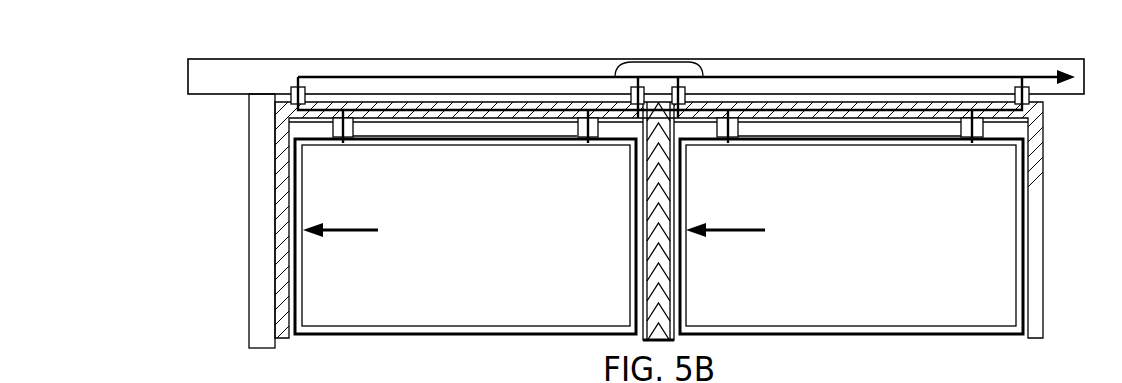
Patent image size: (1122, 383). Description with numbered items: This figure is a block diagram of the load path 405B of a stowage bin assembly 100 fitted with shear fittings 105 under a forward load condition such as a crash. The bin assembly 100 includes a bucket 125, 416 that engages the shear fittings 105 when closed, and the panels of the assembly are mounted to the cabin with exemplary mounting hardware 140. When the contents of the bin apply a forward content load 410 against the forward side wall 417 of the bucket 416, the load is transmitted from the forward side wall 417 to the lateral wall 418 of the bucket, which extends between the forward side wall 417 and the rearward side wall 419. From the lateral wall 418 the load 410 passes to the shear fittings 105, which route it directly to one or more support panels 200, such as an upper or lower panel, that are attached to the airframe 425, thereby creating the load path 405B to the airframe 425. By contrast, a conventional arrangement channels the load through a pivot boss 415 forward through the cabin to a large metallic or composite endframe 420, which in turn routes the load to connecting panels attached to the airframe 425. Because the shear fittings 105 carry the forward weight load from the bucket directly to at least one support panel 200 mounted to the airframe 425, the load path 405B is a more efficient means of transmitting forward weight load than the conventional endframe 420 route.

The stowage bin assembly 100 is at (247, 34).
The airframe 425 is at (188, 78).
The load path 405B is at (934, 75).
The mounting hardware 140 is at (291, 92).
The lateral wall 418 is at (407, 133).
The support panels 200 is at (463, 117).
The shear fittings 105 is at (355, 128).
The endframe 420 is at (252, 222).
The rearward side wall 419 is at (643, 207).
The pivot boss 415 is at (278, 274).
The forward content load 410 is at (348, 233).
The bucket 416 is at (448, 287).
The forward side wall 417 is at (297, 298).
The bucket 125 is at (659, 260).